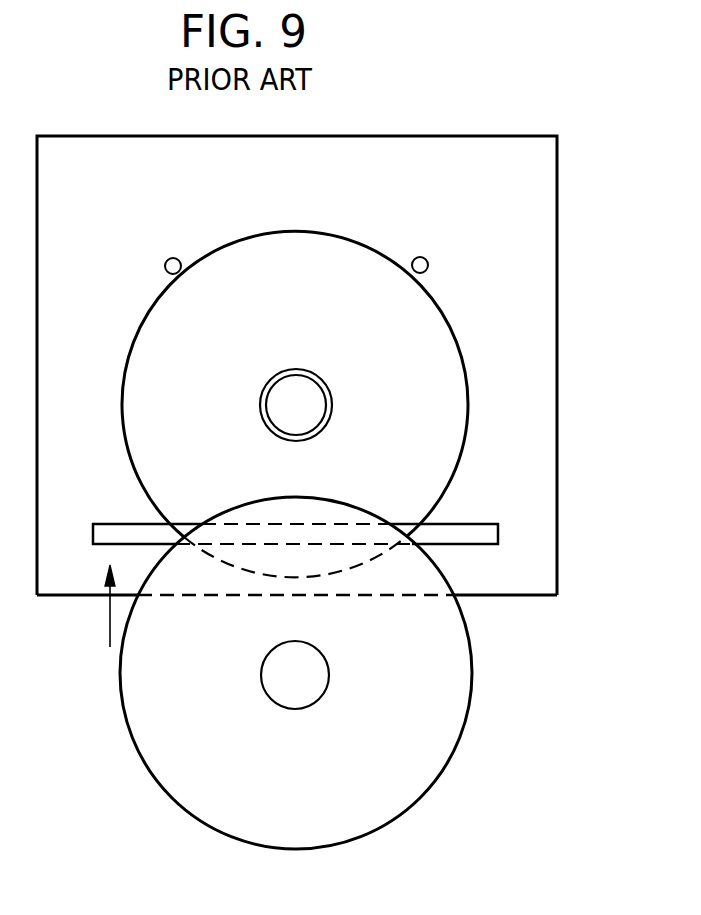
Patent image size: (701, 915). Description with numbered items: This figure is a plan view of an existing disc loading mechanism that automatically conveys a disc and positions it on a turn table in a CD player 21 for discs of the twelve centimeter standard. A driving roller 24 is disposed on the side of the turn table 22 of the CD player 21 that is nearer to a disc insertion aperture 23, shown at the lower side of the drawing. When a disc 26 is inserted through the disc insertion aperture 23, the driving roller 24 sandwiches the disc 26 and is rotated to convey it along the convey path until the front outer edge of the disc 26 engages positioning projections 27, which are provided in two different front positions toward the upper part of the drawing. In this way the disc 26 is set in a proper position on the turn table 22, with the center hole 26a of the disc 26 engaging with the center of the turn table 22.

The CD player 21 is at (500, 594).
The turn table 22 is at (318, 400).
The disc insertion aperture 23 is at (43, 596).
The driving roller 24 is at (478, 532).
The disc 26 is at (143, 733).
The center hole 26a is at (322, 678).
The positioning projections 27 is at (167, 259).